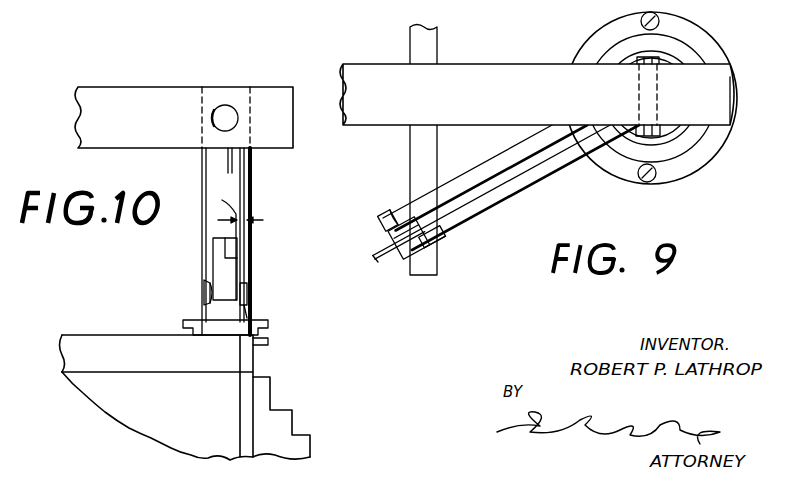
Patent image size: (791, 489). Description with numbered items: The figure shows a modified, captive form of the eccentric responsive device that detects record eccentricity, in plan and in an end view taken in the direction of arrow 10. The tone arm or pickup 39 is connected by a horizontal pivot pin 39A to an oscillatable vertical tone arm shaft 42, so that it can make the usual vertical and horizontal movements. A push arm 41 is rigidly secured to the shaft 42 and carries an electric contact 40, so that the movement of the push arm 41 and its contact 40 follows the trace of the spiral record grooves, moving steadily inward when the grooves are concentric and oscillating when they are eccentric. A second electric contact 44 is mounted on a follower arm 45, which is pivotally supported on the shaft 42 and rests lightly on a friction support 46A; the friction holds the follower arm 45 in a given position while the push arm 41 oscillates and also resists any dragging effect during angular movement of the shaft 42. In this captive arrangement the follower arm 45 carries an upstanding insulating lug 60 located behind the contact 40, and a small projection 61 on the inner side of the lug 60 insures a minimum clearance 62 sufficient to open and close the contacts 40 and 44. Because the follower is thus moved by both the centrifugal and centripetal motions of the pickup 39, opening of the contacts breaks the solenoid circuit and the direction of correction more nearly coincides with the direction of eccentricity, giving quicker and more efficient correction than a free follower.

In FIG. 9, the arrow 10 is at (329, 274).
In FIG. 10, the tone arm 39 is at (119, 97).
In FIG. 9, the tone arm 39 is at (520, 72).
In FIG. 10, the horizontal pivot pin 39A is at (225, 105).
In FIG. 9, the horizontal pivot pin 39A is at (663, 140).
In FIG. 10, the electric contact 40 is at (210, 292).
In FIG. 9, the electric contact 40 is at (366, 232).
In FIG. 9, the push arm 41 is at (598, 198).
In FIG. 10, the tone arm shaft 42 is at (297, 186).
In FIG. 10, the electric contact 44 is at (178, 292).
In FIG. 9, the electric contact 44 is at (381, 198).
In FIG. 10, the follower arm 45 is at (200, 313).
In FIG. 9, the follower arm 45 is at (495, 210).
In FIG. 9, the friction support 46A is at (396, 149).
In FIG. 10, the insulating lug 60 is at (250, 292).
In FIG. 9, the insulating lug 60 is at (445, 240).
In FIG. 10, the projection 61 is at (250, 303).
In FIG. 9, the projection 61 is at (433, 248).
In FIG. 10, the clearance 62 is at (234, 239).
In FIG. 9, the clearance 62 is at (386, 265).